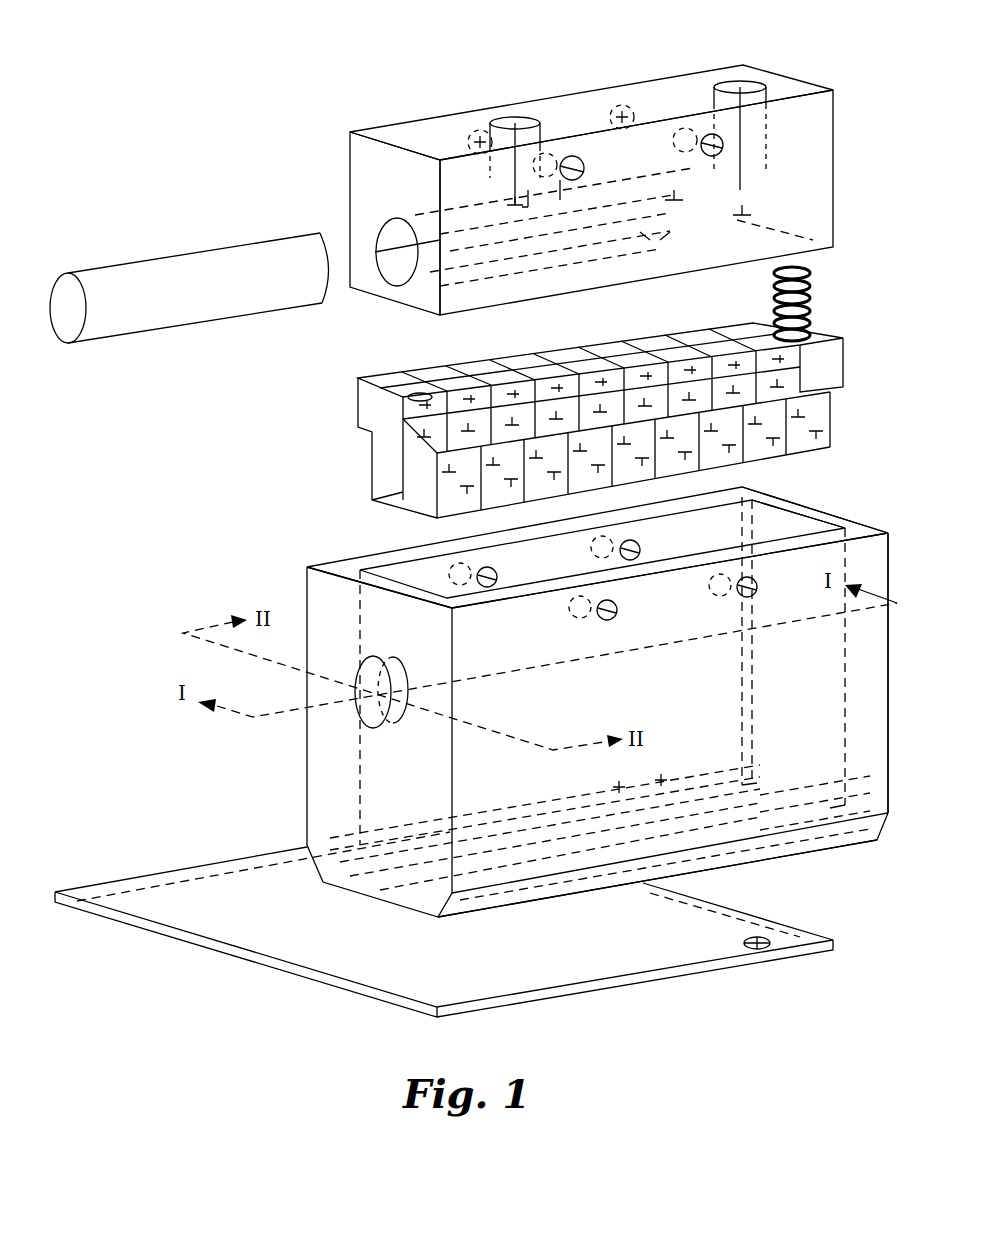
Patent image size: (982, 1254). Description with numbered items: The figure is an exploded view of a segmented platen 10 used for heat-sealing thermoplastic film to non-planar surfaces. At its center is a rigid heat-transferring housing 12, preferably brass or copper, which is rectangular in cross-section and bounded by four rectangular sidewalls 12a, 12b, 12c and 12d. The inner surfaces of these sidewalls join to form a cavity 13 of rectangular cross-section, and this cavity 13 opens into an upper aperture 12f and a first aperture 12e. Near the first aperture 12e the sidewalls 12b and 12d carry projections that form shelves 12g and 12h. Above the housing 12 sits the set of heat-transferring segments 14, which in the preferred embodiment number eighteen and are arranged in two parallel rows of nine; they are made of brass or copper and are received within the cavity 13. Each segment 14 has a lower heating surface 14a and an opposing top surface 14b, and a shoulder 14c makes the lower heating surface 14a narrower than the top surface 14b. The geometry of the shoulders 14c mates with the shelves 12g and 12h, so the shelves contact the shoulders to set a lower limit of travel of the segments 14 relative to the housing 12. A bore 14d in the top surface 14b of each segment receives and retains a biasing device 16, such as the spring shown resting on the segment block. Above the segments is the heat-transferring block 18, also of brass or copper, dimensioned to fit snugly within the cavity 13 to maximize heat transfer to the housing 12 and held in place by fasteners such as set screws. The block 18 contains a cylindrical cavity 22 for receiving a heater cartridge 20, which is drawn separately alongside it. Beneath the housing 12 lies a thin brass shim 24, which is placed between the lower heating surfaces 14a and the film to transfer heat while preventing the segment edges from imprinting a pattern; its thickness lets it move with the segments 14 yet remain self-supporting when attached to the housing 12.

The segmented platen 10 is at (177, 68).
The heat-transferring housing 12 is at (563, 703).
The sidewall 12a is at (305, 792).
The sidewall 12b is at (865, 803).
The sidewall 12c is at (838, 517).
The sidewall 12d is at (330, 560).
The first aperture 12e is at (407, 897).
The upper aperture 12f is at (403, 558).
The shelf 12g is at (833, 805).
The shelf 12h is at (760, 783).
The cavity 13 is at (780, 496).
The heat-transferring segments 14 is at (558, 409).
The lower heating surface 14a is at (812, 453).
The top surface 14b is at (818, 332).
The shoulder 14c is at (365, 432).
The bore 14d is at (415, 395).
The biasing device 16 is at (808, 306).
The heat-transferring block 18 is at (571, 95).
The heater cartridge 20 is at (182, 255).
The cavity 22 is at (352, 238).
The shim 24 is at (112, 880).